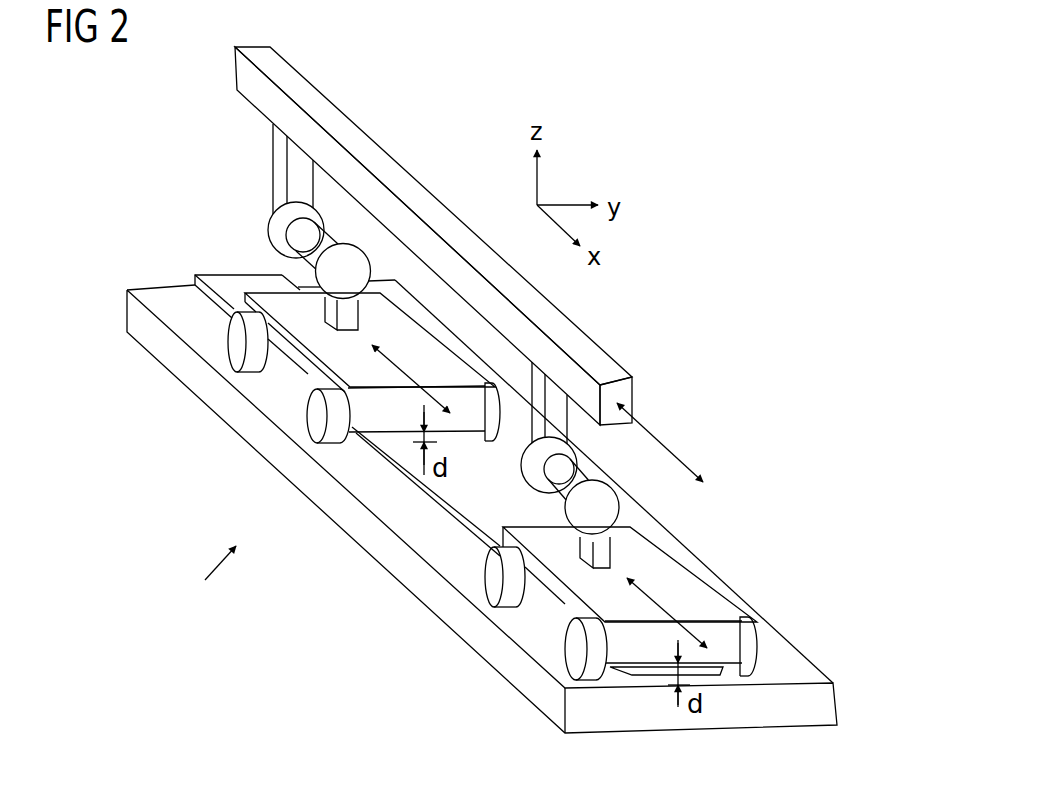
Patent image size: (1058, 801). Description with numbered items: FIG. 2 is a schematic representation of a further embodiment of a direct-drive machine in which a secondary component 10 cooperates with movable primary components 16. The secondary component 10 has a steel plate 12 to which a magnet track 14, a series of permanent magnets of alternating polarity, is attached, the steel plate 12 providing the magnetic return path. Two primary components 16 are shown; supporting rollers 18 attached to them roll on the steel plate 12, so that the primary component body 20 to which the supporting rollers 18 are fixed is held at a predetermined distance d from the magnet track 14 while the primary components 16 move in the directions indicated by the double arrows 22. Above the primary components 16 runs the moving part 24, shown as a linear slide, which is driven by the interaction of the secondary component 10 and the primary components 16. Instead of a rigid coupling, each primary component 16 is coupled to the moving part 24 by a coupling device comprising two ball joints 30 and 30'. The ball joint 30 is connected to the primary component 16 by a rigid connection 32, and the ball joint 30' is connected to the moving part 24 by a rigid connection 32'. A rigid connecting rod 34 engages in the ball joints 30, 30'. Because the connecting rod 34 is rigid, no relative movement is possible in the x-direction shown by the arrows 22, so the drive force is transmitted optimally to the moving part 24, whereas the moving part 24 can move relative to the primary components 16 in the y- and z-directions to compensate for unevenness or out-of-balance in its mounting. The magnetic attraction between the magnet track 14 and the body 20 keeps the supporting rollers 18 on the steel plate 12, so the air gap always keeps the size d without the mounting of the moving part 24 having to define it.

The secondary component 10 is at (213, 584).
The steel plate 12 is at (838, 700).
The magnet track 14 is at (423, 490).
The primary component 16 is at (300, 370).
The supporting roller 18 is at (245, 345).
The primary component body 20 is at (358, 436).
The arrows 22 is at (388, 357).
The moving part 24 is at (238, 80).
The ball joint 30 is at (468, 335).
The ball joint 30' is at (388, 347).
The rigid connection 32 is at (467, 432).
The rigid connection 32' is at (388, 284).
The connecting rod 34 is at (298, 256).